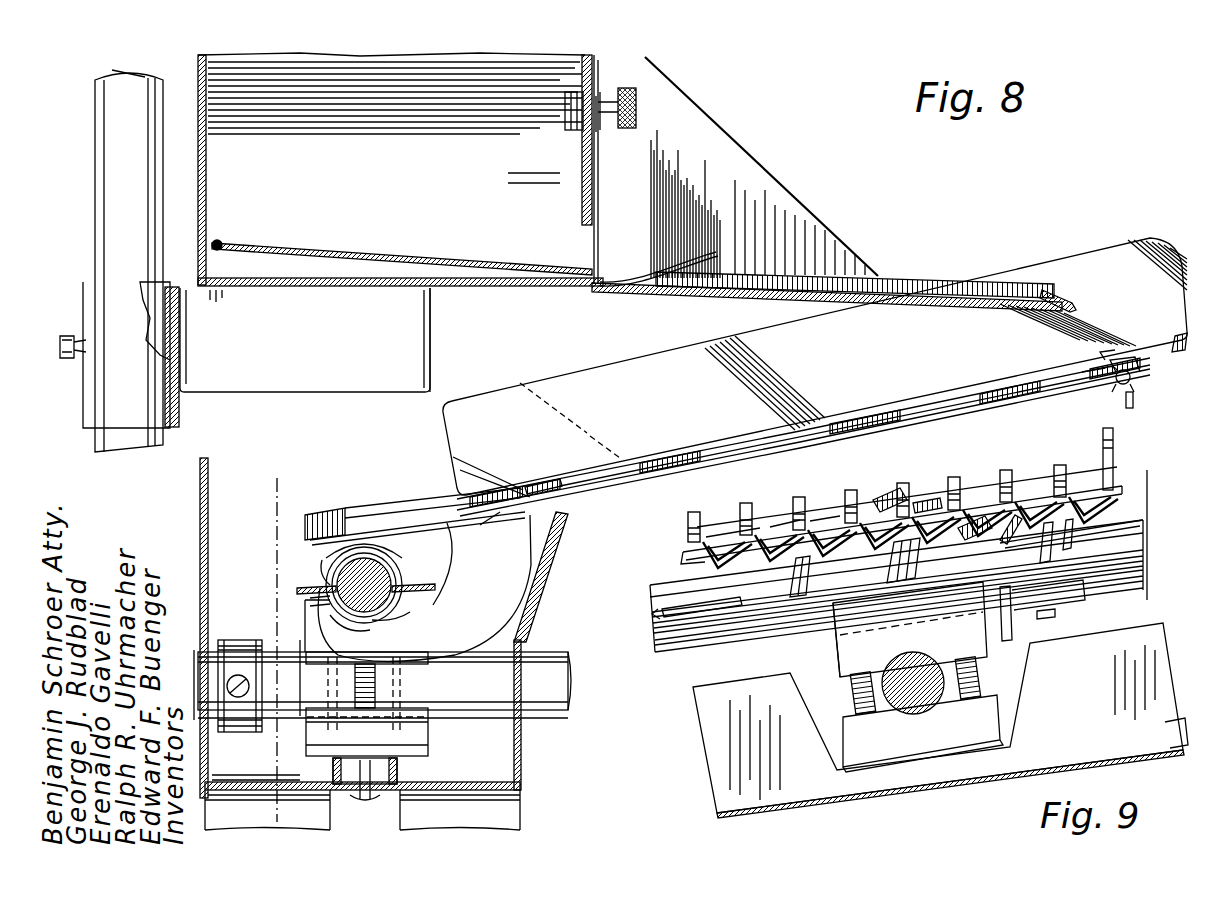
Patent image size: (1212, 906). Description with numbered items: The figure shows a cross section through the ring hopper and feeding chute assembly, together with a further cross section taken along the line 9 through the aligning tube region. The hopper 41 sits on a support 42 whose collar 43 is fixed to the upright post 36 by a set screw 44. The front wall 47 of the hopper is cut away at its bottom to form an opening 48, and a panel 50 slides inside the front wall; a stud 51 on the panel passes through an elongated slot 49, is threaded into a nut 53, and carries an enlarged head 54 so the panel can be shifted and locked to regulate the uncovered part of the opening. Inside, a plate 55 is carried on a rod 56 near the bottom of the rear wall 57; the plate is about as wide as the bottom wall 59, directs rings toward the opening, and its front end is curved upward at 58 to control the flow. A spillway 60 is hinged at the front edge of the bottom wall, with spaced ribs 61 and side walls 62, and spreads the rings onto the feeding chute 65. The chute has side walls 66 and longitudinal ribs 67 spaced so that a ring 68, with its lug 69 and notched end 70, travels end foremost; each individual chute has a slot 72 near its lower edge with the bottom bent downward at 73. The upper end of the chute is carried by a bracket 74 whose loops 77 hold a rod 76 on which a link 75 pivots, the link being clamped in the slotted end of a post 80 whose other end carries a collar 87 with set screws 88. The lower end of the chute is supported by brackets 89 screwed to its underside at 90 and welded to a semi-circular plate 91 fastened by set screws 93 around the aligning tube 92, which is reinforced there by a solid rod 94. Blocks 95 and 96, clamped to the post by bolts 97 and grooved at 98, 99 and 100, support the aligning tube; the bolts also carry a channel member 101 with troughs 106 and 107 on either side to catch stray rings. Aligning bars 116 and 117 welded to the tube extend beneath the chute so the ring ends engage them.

In FIG. 8, the post 36 is at (165, 435).
In FIG. 8, the hopper 41 is at (339, 295).
In FIG. 8, the support 42 is at (430, 330).
In FIG. 8, the collar 43 is at (180, 405).
In FIG. 8, the set screw 44 is at (66, 338).
In FIG. 8, the front wall 47 is at (592, 170).
In FIG. 8, the opening 48 is at (598, 232).
In FIG. 8, the elongated slot 49 is at (596, 140).
In FIG. 8, the panel 50 is at (580, 203).
In FIG. 8, the stud 51 is at (606, 104).
In FIG. 8, the nut 53 is at (572, 128).
In FIG. 8, the enlarged head 54 is at (638, 115).
In FIG. 8, the plate 55 is at (398, 258).
In FIG. 8, the rod 56 is at (222, 249).
In FIG. 8, the rear wall 57 is at (210, 158).
In FIG. 8, the upwardly curved front end 58 is at (710, 250).
In FIG. 8, the bottom wall 59 is at (502, 287).
In FIG. 8, the spillway 60 is at (786, 311).
In FIG. 8, the ribs 61 is at (810, 296).
In FIG. 8, the side walls 62 is at (720, 143).
In FIG. 8, the feeding chute 65 is at (855, 442).
In FIG. 8, the side walls 66 is at (706, 346).
In FIG. 9, the side walls 66 is at (1114, 462).
In FIG. 8, the ribs 67 is at (840, 420).
In FIG. 9, the ribs 67 is at (752, 525).
In FIG. 8, the ring 68 is at (1078, 305).
In FIG. 9, the ring 68 is at (715, 602).
In FIG. 8, the lug 69 is at (333, 580).
In FIG. 8, the notched end 70 is at (405, 580).
In FIG. 8, the slot 72 is at (330, 516).
In FIG. 9, the slot 72 is at (688, 560).
In FIG. 8, the downwardly bent bottom 73 is at (305, 540).
In FIG. 9, the downwardly bent bottom 73 is at (1124, 492).
In FIG. 8, the bracket 74 is at (1100, 378).
In FIG. 8, the link 75 is at (1134, 402).
In FIG. 8, the rod 76 is at (1133, 378).
In FIG. 8, the loops 77 is at (1110, 396).
In FIG. 8, the post 80 is at (470, 716).
In FIG. 9, the post 80 is at (913, 715).
In FIG. 8, the collar 87 is at (238, 728).
In FIG. 8, the set screws 88 is at (238, 672).
In FIG. 8, the brackets 89 is at (470, 634).
In FIG. 9, the brackets 89 is at (1020, 613).
In FIG. 8, the screw connection 90 is at (466, 536).
In FIG. 8, the semi-circular plate 91 is at (405, 614).
In FIG. 9, the semi-circular plate 91 is at (1100, 605).
In FIG. 8, the aligning tube 92 is at (310, 600).
In FIG. 9, the aligning tube 92 is at (1158, 523).
In FIG. 8, the set screws 93 is at (356, 626).
In FIG. 9, the set screws 93 is at (1058, 615).
In FIG. 8, the solid rod 94 is at (400, 560).
In FIG. 8, the block 95 is at (430, 665).
In FIG. 9, the block 95 is at (838, 645).
In FIG. 8, the block 96 is at (430, 755).
In FIG. 9, the block 96 is at (855, 742).
In FIG. 8, the bolts 97 is at (378, 690).
In FIG. 9, the bolts 97 is at (853, 692).
In FIG. 9, the groove 98 is at (926, 664).
In FIG. 9, the groove 99 is at (944, 702).
In FIG. 8, the groove 100 is at (332, 606).
In FIG. 9, the groove 100 is at (862, 620).
In FIG. 8, the channel member 101 is at (344, 800).
In FIG. 9, the channel member 101 is at (1170, 720).
In FIG. 8, the trough 106 is at (208, 510).
In FIG. 9, the trough 106 is at (970, 492).
In FIG. 8, the trough 107 is at (532, 765).
In FIG. 9, the trough 107 is at (712, 762).
In FIG. 8, the aligning bar 116 is at (296, 587).
In FIG. 9, the aligning bar 116 is at (764, 604).
In FIG. 8, the aligning bar 117 is at (432, 590).
In FIG. 8, the section line 9 is at (296, 815).